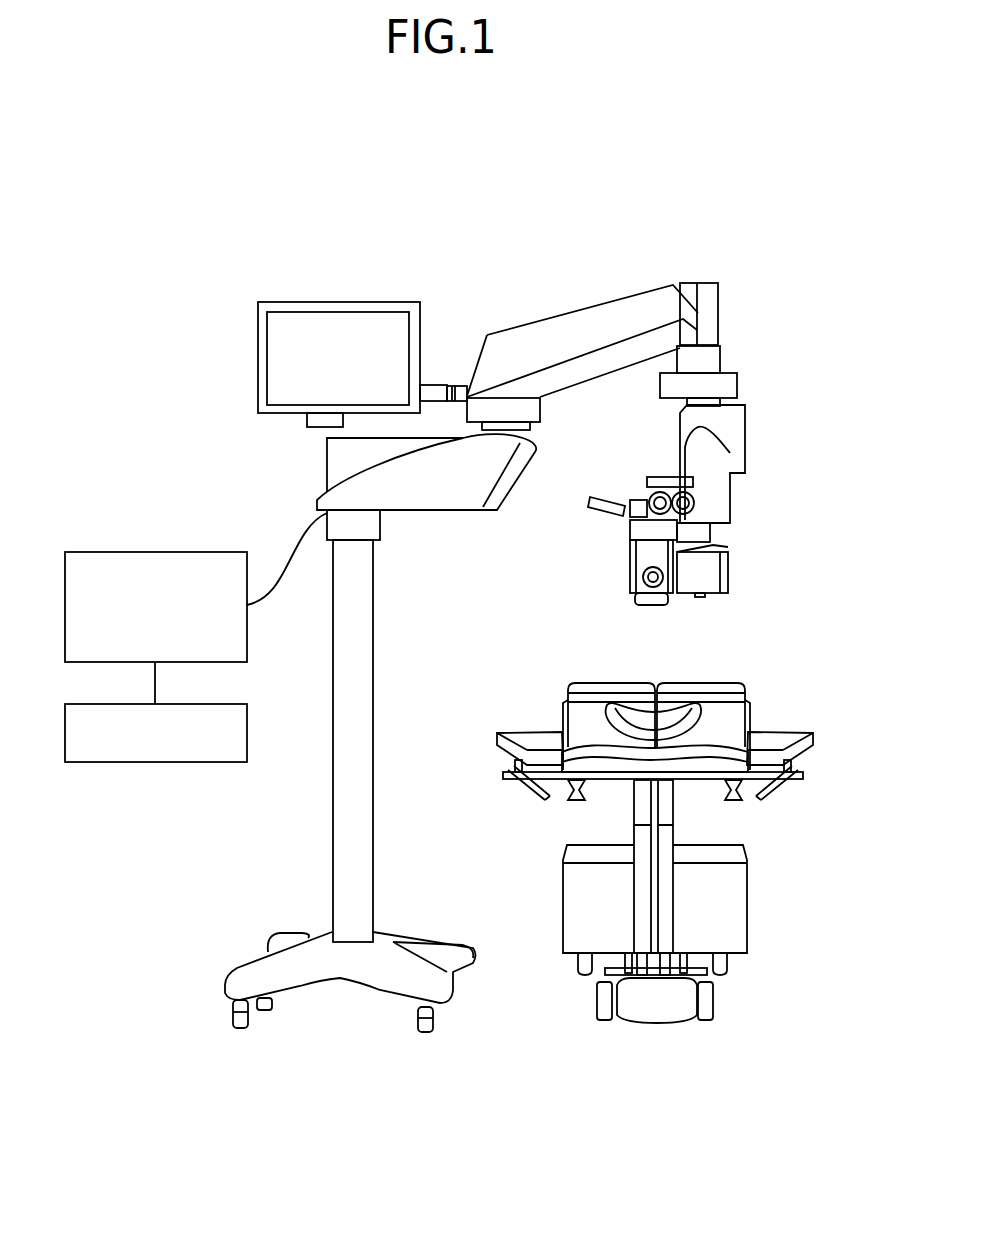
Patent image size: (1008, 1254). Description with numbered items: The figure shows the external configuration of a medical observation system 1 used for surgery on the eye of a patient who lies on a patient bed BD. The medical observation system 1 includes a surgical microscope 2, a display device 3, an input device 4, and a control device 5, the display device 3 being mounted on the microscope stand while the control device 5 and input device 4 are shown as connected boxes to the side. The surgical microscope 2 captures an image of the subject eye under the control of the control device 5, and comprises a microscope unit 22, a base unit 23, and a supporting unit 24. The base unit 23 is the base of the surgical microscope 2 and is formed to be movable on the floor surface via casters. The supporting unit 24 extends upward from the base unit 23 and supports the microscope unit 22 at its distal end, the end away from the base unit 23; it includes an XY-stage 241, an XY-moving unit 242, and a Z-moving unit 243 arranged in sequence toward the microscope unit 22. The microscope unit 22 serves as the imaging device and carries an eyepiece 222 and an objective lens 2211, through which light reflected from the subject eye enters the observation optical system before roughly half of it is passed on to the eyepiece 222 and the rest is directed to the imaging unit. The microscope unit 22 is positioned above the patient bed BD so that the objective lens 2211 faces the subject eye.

The medical observation system 1 is at (782, 160).
The surgical microscope 2 is at (548, 268).
The display device 3 is at (342, 302).
The input device 4 is at (198, 763).
The control device 5 is at (157, 551).
The microscope unit 22 is at (667, 581).
The base unit 23 is at (248, 975).
The supporting unit 24 is at (457, 462).
The XY-stage 241 is at (713, 386).
The XY-moving unit 242 is at (727, 418).
The Z-moving unit 243 is at (705, 455).
The eyepiece 222 is at (703, 500).
The objective lens 2211 is at (627, 597).
The patient bed BD is at (783, 827).